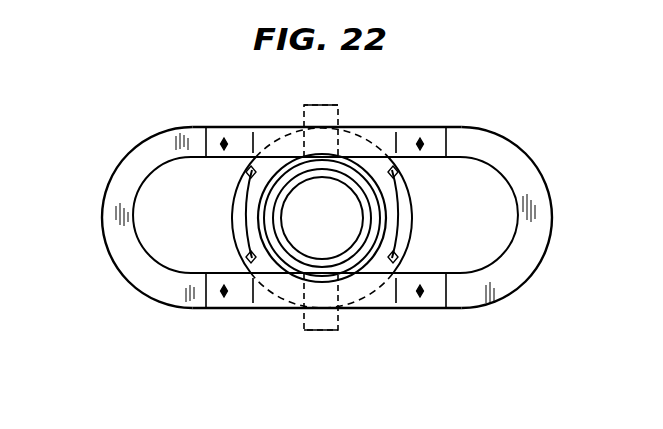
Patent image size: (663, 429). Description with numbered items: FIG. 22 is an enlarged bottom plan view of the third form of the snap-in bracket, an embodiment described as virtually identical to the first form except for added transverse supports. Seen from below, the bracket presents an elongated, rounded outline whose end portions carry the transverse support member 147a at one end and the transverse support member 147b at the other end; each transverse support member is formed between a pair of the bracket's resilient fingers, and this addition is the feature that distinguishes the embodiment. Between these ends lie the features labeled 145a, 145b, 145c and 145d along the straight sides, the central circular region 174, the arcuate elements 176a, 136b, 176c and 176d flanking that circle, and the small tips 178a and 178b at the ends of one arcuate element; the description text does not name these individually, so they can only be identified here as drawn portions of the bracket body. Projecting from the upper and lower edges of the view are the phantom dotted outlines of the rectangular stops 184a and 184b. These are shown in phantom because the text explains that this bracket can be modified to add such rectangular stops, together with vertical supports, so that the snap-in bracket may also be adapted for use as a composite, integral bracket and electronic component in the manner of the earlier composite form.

The side wall segment 145a is at (228, 127).
The side wall segment 145b is at (238, 302).
The side wall segment 145c is at (431, 305).
The side wall segment 145d is at (437, 127).
The transverse support member 147a is at (112, 190).
The transverse support member 147b is at (528, 176).
The arcuate member 176a is at (232, 216).
The arcuate member tip 176c is at (395, 258).
The arcuate member tip 176d is at (395, 172).
The tip 178a is at (249, 172).
The tip 178b is at (249, 258).
The arcuate member 136b is at (412, 216).
The opening 174 is at (318, 264).
The rectangular stop 184a is at (316, 331).
The rectangular stop 184b is at (324, 105).